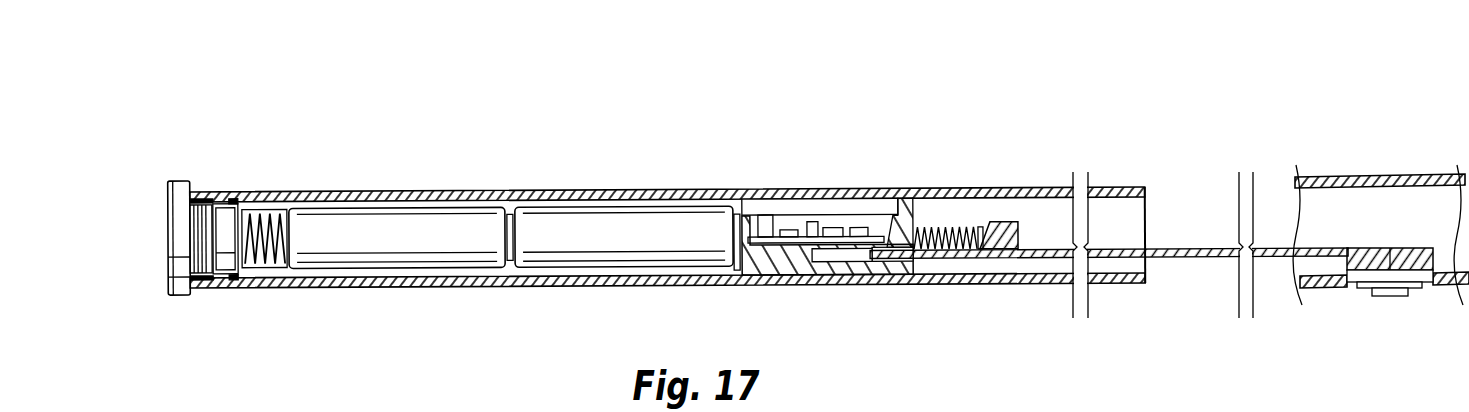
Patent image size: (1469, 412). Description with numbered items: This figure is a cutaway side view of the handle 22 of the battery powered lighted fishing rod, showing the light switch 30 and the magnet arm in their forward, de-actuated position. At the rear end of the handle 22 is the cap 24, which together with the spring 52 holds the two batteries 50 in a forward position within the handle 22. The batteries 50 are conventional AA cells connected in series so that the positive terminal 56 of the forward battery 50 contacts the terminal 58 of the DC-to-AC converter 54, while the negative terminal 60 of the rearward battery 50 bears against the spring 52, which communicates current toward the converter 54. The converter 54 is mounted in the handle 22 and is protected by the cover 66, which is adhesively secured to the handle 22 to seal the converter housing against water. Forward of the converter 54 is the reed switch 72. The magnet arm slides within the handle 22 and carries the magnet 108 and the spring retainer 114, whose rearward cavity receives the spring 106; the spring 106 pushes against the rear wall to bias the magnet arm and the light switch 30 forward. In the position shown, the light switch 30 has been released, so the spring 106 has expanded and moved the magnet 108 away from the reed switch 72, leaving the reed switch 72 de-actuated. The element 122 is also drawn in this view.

The handle 22 is at (963, 182).
The cap 24 is at (167, 222).
The light switch 30 is at (1380, 297).
The batteries 50 is at (392, 227).
The spring 52 is at (277, 213).
The DC-to-AC converter 54 is at (804, 215).
The positive terminal 56 is at (741, 280).
The terminal 58 is at (751, 225).
The negative terminal 60 is at (276, 268).
The cover 66 is at (846, 201).
The reed switch 72 is at (871, 224).
The spring 106 is at (932, 262).
The magnet 108 is at (878, 276).
The spring retainer 114 is at (1005, 225).
The actuator rod 122 is at (1118, 217).